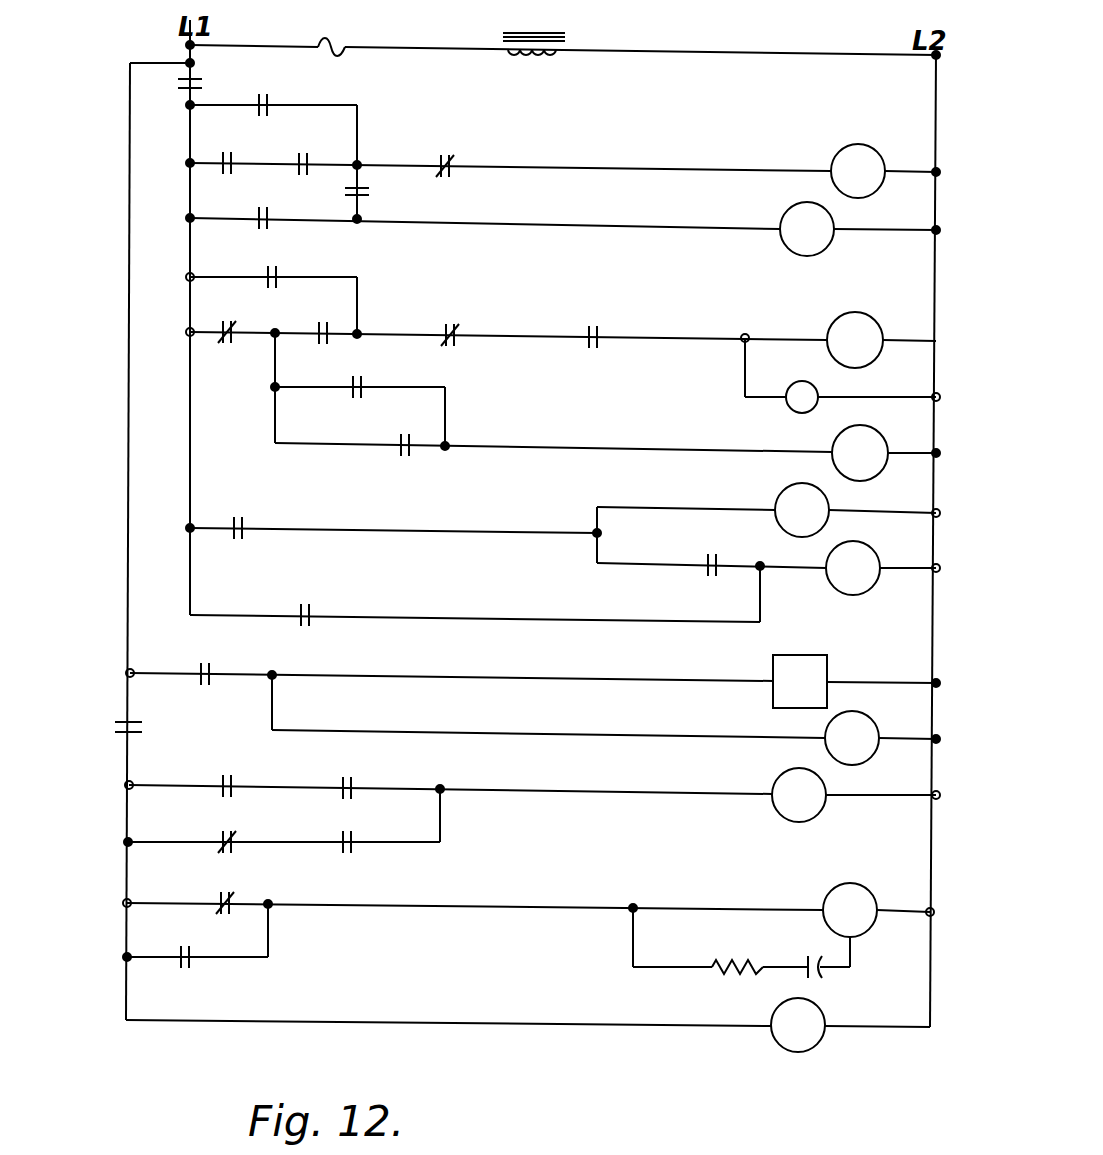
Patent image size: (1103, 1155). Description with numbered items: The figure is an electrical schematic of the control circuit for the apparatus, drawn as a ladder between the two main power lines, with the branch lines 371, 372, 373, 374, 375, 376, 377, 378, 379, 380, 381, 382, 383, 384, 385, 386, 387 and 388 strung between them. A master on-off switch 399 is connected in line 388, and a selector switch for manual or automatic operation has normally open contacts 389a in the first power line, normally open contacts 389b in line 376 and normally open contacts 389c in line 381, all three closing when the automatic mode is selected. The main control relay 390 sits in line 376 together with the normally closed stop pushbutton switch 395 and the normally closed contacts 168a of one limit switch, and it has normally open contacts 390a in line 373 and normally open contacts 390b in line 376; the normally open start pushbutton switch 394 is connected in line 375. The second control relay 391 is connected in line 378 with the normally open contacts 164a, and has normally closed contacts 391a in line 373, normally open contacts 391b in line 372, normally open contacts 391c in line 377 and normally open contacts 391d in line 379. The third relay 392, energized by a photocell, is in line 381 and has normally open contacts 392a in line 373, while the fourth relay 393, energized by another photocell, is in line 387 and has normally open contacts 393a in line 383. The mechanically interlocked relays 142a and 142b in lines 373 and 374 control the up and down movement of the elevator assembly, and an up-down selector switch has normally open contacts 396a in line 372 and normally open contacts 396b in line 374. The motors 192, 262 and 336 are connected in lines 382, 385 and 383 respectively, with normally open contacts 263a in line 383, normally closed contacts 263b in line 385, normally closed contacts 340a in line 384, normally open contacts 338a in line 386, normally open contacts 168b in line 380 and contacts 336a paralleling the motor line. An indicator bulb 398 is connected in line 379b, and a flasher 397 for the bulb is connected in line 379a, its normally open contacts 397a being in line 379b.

The mechanically interlocked relay 142a is at (838, 156).
The mechanically interlocked relay 142b is at (782, 211).
The normally open contacts 164a is at (405, 456).
The normally closed contacts 168a is at (228, 315).
The normally open contacts 168b is at (308, 603).
The motor 192 is at (822, 736).
The motor 262 is at (840, 899).
The normally open contacts 263a is at (232, 776).
The normally closed contacts 263b is at (232, 894).
The motor 336 is at (780, 808).
The contacts 336a is at (350, 832).
The normally open contacts 338a is at (190, 955).
The normally closed contacts 340a is at (232, 833).
The branch line 371 is at (636, 54).
The branch line 372 is at (343, 106).
The branch line 373 is at (560, 163).
The branch line 374 is at (560, 222).
The branch line 375 is at (340, 277).
The branch line 376 is at (648, 336).
The branch line 377 is at (444, 390).
The branch line 378 is at (597, 447).
The branch line 379 is at (420, 530).
The branch line 379a is at (676, 507).
The branch line 379b is at (680, 567).
The branch line 380 is at (495, 615).
The branch line 381 is at (545, 680).
The branch line 382 is at (548, 731).
The branch line 383 is at (592, 785).
The branch line 384 is at (430, 847).
The branch line 385 is at (370, 905).
The branch line 386 is at (245, 960).
The branch line 387 is at (515, 1026).
The branch line 388 is at (128, 528).
The normally open contacts 389a is at (203, 78).
The normally open contacts 389b is at (592, 324).
The normally open contacts 389c is at (208, 671).
The main control relay 390 is at (832, 322).
The normally open contacts 390a is at (302, 152).
The normally open contacts 390b is at (322, 320).
The second control relay 391 is at (838, 444).
The normally closed contacts 391a is at (447, 155).
The normally open contacts 391b is at (372, 193).
The normally open contacts 391c is at (358, 375).
The normally open contacts 391d is at (238, 506).
The third relay 392 is at (772, 668).
The normally open contacts 392a is at (226, 150).
The fourth relay 393 is at (785, 1012).
The normally open contacts 393a is at (352, 778).
The start pushbutton switch 394 is at (270, 265).
The stop pushbutton switch 395 is at (450, 322).
The normally open contacts 396a is at (268, 103).
The normally open contacts 396b is at (262, 208).
The flasher 397 is at (790, 491).
The normally open contacts 397a is at (712, 552).
The bulb 398 is at (845, 598).
The master on-off switch 399 is at (150, 728).